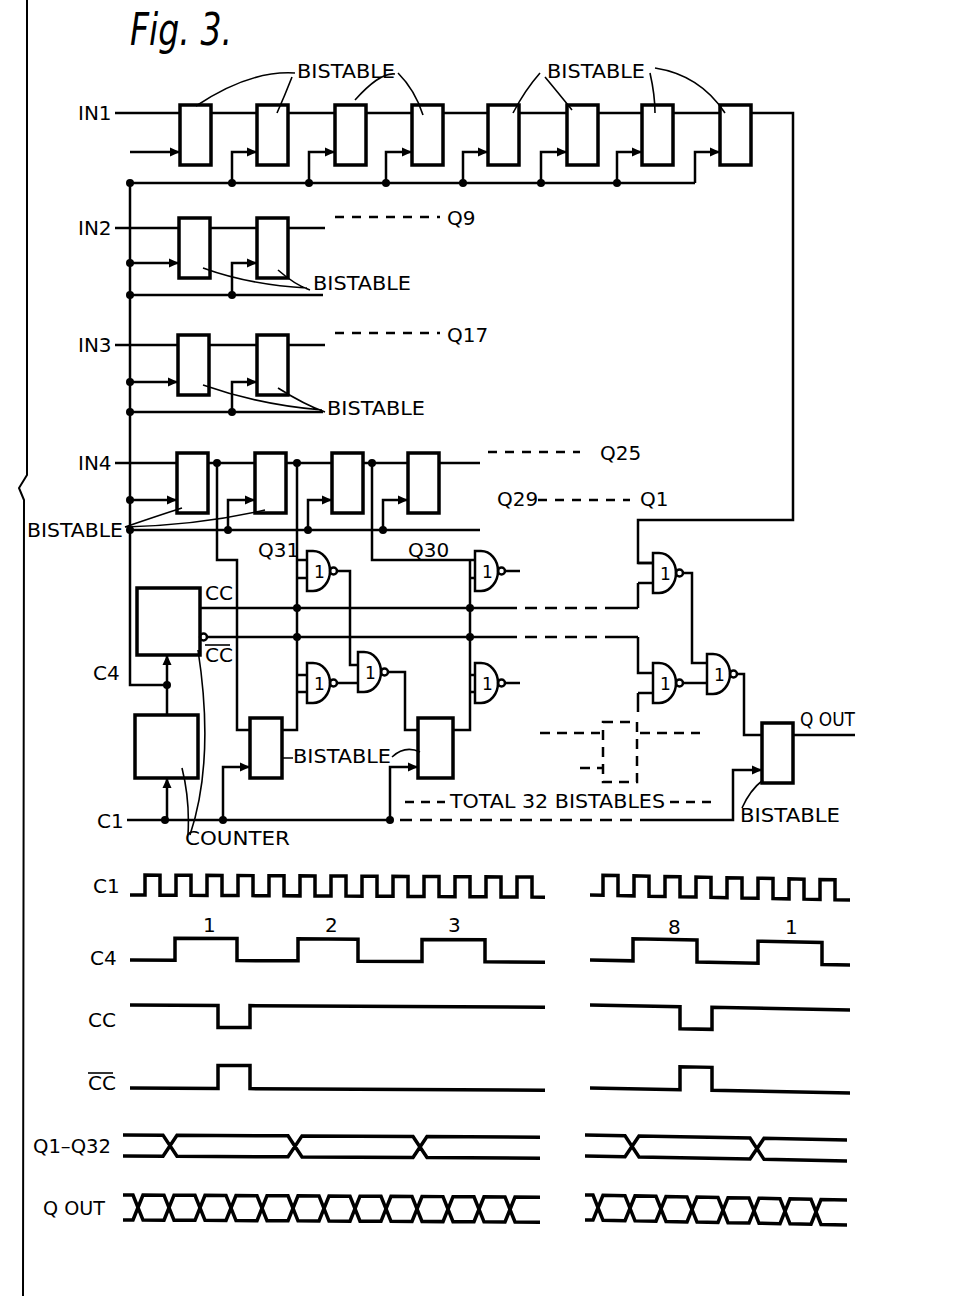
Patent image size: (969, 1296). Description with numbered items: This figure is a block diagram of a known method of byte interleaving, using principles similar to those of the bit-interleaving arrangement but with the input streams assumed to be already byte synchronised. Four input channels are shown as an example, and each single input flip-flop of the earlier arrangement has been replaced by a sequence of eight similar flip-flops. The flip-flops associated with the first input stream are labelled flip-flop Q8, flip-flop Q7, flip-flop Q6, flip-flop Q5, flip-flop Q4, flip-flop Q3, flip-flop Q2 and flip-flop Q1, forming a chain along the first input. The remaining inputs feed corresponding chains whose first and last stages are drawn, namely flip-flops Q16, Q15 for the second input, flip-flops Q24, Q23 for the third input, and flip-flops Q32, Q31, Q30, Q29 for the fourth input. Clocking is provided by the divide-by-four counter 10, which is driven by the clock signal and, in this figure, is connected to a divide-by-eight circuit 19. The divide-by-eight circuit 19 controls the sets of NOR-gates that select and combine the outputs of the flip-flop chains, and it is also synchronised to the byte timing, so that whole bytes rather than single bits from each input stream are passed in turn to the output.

The divide-by-4 counter 10 is at (135, 748).
The divide-by-8 circuit 19 is at (175, 588).
The flip-flop Q1 is at (751, 129).
The flip-flop Q2 is at (673, 128).
The flip-flop Q3 is at (598, 128).
The flip-flop Q4 is at (519, 128).
The flip-flop Q5 is at (443, 128).
The flip-flop Q6 is at (366, 128).
The flip-flop Q7 is at (288, 128).
The flip-flop Q8 is at (211, 128).
The bistable Q15 is at (294, 240).
The bistable Q16 is at (216, 240).
The bistable Q23 is at (294, 358).
The bistable Q24 is at (215, 358).
The bistable Q29 is at (447, 476).
The bistable Q30 is at (370, 475).
The bistable Q31 is at (293, 475).
The bistable Q32 is at (215, 475).